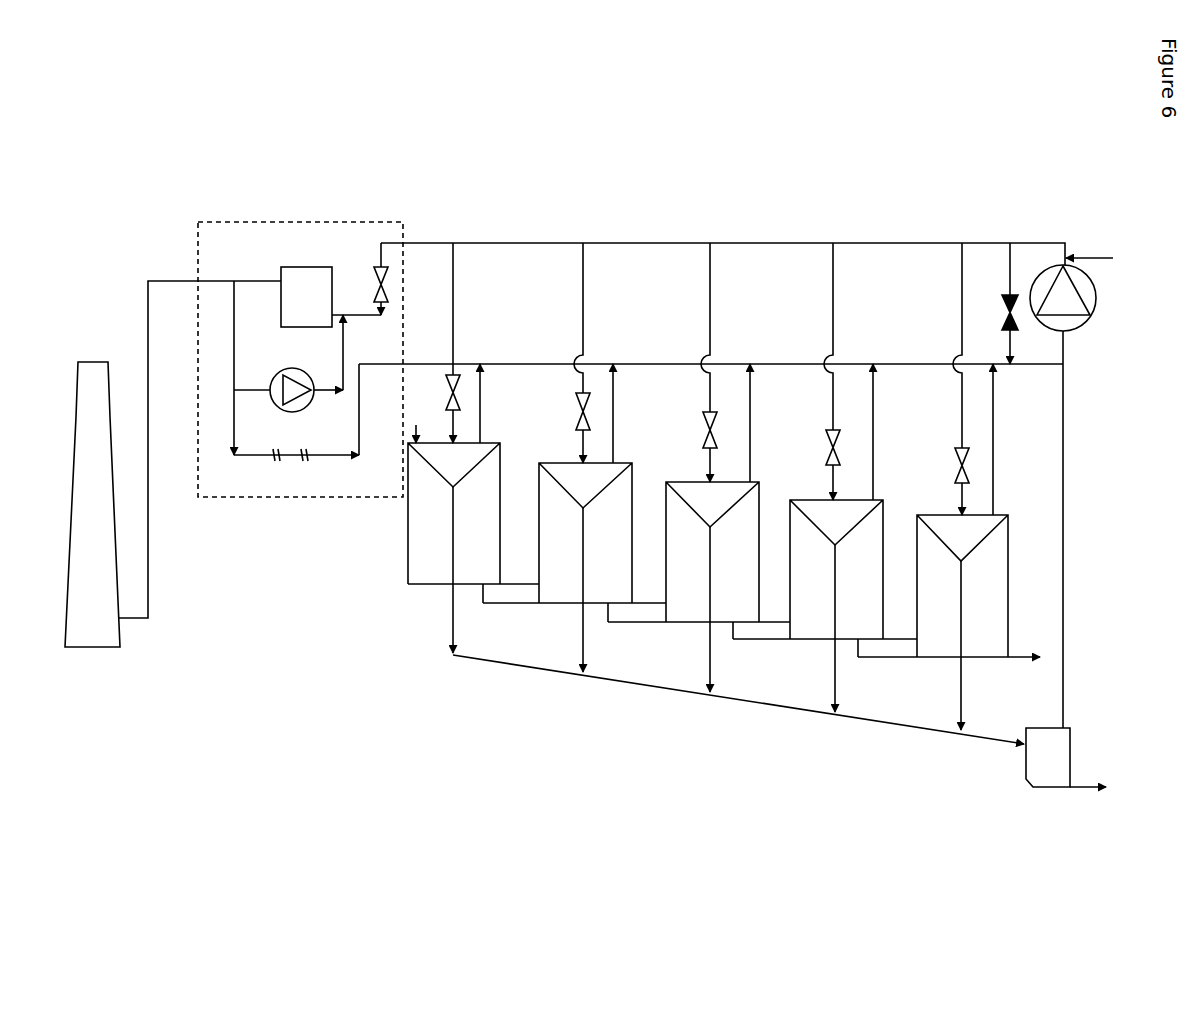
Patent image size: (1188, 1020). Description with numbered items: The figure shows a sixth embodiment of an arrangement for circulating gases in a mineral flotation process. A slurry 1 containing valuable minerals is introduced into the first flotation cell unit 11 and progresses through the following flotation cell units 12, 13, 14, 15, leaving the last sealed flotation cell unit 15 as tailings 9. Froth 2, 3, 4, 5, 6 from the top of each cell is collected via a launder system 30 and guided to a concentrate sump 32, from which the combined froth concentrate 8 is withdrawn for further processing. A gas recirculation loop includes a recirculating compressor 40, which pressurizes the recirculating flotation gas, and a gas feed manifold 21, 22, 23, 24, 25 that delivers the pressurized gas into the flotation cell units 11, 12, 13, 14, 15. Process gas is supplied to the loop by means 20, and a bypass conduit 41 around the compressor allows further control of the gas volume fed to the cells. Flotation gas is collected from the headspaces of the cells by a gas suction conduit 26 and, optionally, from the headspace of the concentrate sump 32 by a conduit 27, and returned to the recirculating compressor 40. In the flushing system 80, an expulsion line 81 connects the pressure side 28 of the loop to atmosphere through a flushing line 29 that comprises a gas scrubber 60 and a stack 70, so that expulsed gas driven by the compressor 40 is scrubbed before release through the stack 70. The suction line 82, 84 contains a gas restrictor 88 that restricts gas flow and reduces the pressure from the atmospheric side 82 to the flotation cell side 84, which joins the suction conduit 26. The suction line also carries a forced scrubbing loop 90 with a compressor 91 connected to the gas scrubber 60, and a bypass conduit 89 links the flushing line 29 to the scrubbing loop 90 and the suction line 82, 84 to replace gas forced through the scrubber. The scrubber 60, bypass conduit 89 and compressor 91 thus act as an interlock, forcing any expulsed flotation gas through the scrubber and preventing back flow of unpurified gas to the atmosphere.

The slurry 1 is at (416, 424).
The froth 2 is at (467, 570).
The froth 3 is at (595, 590).
The froth 4 is at (723, 609).
The froth 5 is at (845, 628).
The froth 6 is at (974, 645).
The combined froth concentrate 8 is at (1088, 772).
The tailings 9 is at (949, 643).
The first flotation cell unit 11 is at (473, 483).
The flotation cell unit 12 is at (574, 493).
The flotation cell unit 13 is at (699, 501).
The flotation cell unit 14 is at (825, 510).
The last flotation cell unit 15 is at (962, 510).
The means for providing process gas 20 is at (1103, 253).
The gas feed manifold 21 is at (465, 343).
The gas feed manifold 22 is at (592, 353).
The gas feed manifold 23 is at (697, 362).
The gas feed manifold 24 is at (822, 371).
The gas feed manifold 25 is at (950, 379).
The gas suction conduit 26 is at (711, 352).
The conduit 27 is at (1077, 529).
The pressure side 28 is at (723, 254).
The flushing line 29 is at (176, 439).
The launder system 30 is at (738, 699).
The concentrate sump 32 is at (1048, 757).
The recirculating compressor 40 is at (1078, 298).
The bypass conduit 41 is at (999, 303).
The gas scrubber 60 is at (331, 297).
The stack 70 is at (92, 504).
The flushing system 80 is at (300, 350).
The expulsion line 81 is at (370, 279).
The suction line 82 is at (257, 292).
The suction line 84 is at (375, 409).
The gas restrictor 88 is at (296, 464).
The bypass conduit 89 is at (224, 368).
The forced scrubbing loop 90 is at (252, 380).
The compressor 91 is at (306, 373).